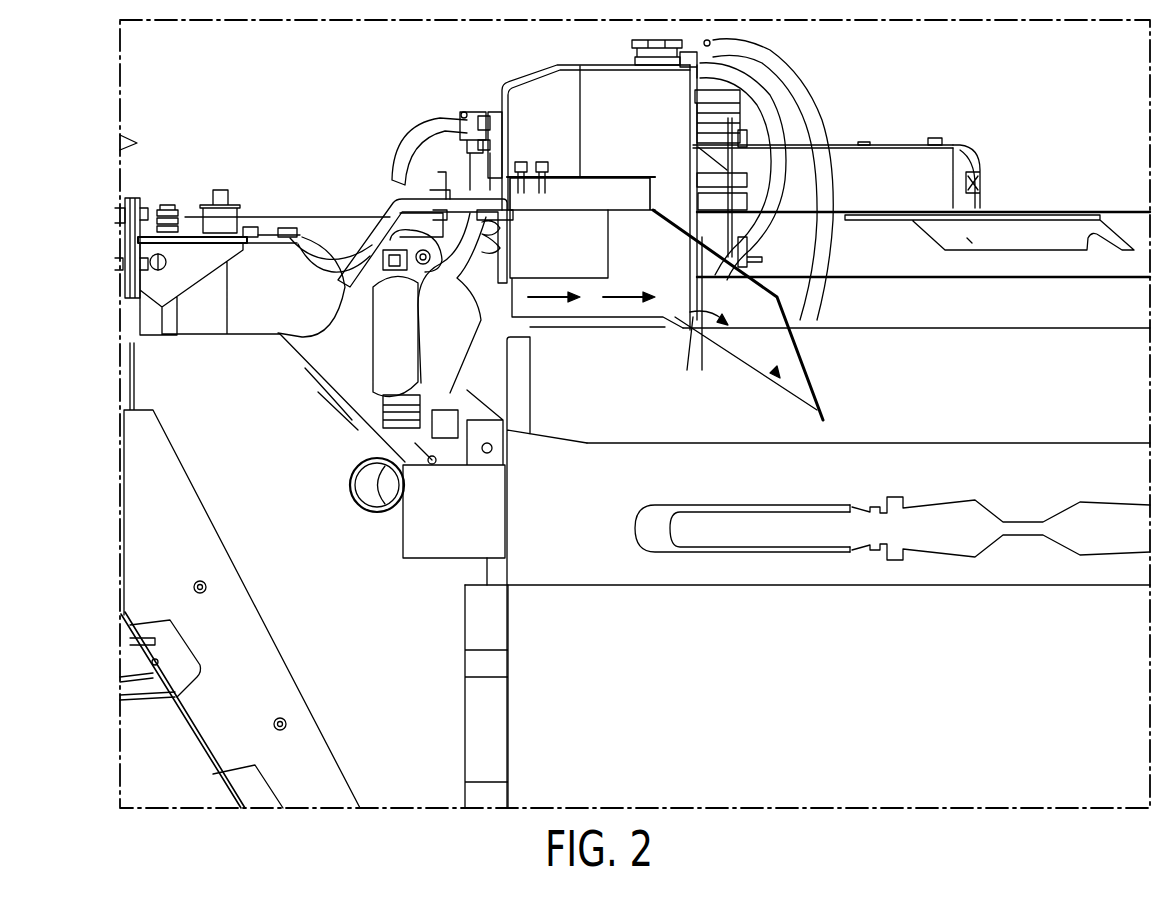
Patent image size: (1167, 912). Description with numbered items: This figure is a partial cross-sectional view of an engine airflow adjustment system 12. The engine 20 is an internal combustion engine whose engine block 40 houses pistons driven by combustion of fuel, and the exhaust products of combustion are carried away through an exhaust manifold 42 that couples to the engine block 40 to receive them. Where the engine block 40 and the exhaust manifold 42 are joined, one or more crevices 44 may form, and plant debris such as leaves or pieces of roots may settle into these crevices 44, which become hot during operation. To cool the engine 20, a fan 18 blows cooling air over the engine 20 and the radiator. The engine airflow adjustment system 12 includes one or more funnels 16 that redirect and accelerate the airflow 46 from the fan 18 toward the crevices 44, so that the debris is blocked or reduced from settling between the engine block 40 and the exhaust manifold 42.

The engine airflow adjustment system 12 is at (303, 128).
The funnel 16 is at (687, 253).
The fan 18 is at (200, 380).
The engine 20 is at (992, 153).
The engine block 40 is at (1120, 347).
The exhaust manifold 42 is at (752, 527).
The crevice 44 is at (862, 467).
The airflow 46 is at (545, 299).